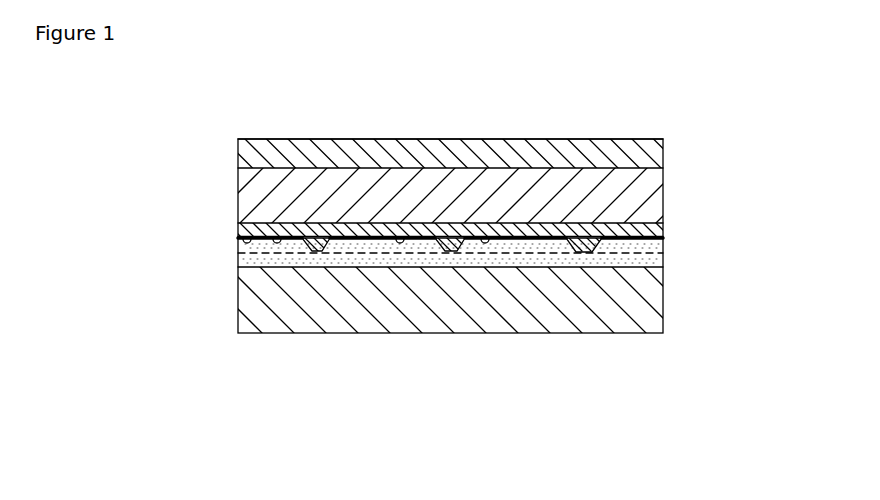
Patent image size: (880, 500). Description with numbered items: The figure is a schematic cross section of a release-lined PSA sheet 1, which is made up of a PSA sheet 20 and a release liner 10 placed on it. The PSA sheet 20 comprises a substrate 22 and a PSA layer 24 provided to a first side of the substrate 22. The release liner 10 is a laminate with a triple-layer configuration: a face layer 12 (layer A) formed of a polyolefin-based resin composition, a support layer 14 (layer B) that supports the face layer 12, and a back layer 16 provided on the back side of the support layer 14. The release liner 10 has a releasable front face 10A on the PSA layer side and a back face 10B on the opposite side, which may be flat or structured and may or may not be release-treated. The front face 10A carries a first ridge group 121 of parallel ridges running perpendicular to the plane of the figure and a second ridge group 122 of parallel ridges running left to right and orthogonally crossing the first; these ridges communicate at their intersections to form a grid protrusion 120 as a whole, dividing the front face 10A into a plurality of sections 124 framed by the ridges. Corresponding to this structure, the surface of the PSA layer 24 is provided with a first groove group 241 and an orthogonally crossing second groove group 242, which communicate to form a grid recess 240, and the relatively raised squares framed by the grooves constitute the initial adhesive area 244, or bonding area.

The release-lined PSA sheet 1 is at (714, 96).
The release liner 10 is at (732, 142).
The front face 10A is at (240, 243).
The back face 10B is at (257, 139).
The face layer 12 is at (663, 233).
The support layer 14 is at (663, 197).
The back layer 16 is at (663, 155).
The PSA sheet 20 is at (732, 250).
The substrate 22 is at (663, 318).
The PSA layer 24 is at (663, 263).
The grid protrusion 120 is at (387, 412).
The first ridge group 121 is at (320, 243).
The second ridge group 122 is at (385, 243).
The sections 124 is at (287, 232).
The grid recess 240 is at (633, 48).
The first groove group 241 is at (591, 245).
The second groove group 242 is at (538, 238).
The initial adhesive area 244 is at (413, 240).